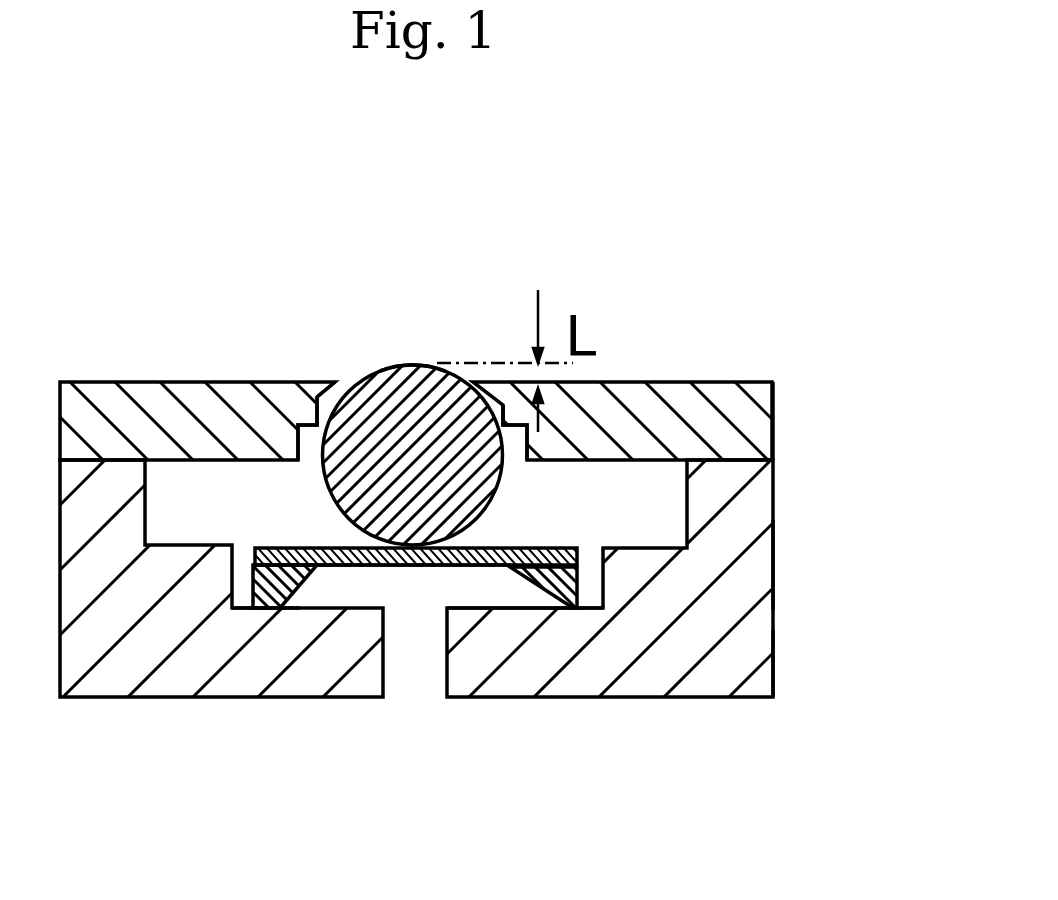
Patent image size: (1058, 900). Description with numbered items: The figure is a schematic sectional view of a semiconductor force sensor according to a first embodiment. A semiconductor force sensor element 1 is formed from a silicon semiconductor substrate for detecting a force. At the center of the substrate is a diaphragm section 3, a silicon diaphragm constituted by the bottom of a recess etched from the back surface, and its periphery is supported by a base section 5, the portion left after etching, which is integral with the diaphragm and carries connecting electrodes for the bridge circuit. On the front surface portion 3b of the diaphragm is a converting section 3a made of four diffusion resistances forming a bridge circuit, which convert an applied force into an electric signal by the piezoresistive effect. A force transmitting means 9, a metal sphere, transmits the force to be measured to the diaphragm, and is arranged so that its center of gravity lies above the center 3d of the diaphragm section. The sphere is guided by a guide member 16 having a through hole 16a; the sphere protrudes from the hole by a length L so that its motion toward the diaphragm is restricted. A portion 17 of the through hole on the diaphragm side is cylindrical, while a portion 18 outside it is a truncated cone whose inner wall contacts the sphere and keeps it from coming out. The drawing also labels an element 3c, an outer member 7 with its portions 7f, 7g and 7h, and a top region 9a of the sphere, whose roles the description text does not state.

The semiconductor force sensor element 1 is at (270, 610).
The diaphragm section 3 is at (376, 548).
The converting section 3a is at (316, 568).
The front surface portion 3b is at (343, 540).
The right leg portion of thrust plate 3c is at (472, 567).
The center 3d is at (413, 565).
The base section 5 is at (563, 608).
The housing 7 is at (773, 493).
The lower outer portion of housing 7f is at (773, 672).
The middle outer portion of housing 7g is at (773, 565).
The upper outer portion of housing 7h is at (773, 400).
The force transmitting means 9 is at (372, 372).
The top of ball 9a is at (427, 370).
The guide member 16 is at (744, 382).
The through hole 16a is at (322, 398).
The portion of the through hole 17 is at (507, 430).
The portion of the through hole 18 is at (493, 428).